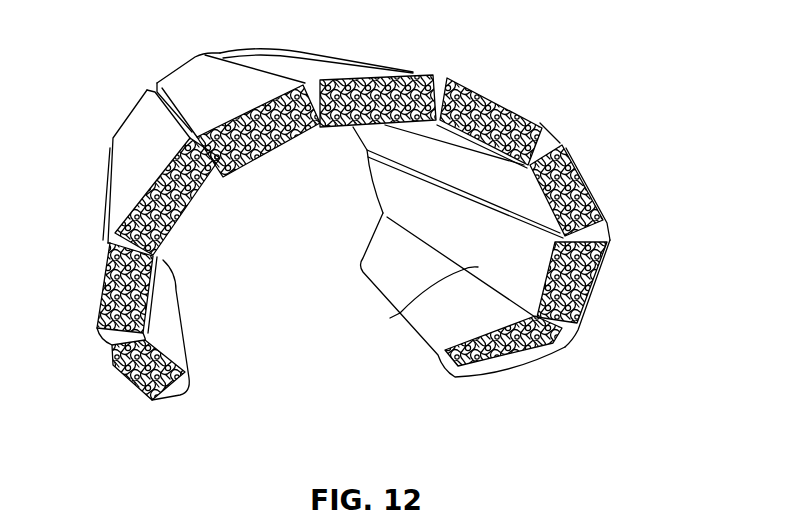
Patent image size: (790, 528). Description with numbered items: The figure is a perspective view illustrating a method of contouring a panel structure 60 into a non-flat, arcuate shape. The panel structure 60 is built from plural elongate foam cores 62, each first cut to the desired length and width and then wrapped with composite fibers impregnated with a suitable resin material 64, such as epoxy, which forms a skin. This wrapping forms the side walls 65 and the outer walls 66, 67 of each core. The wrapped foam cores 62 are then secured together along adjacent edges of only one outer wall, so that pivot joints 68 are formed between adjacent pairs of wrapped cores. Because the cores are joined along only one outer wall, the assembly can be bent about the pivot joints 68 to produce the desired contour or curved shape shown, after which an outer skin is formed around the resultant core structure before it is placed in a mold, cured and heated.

The panel structure 60 is at (354, 216).
The elongate foam core 62 is at (268, 148).
The resin material 64 is at (107, 363).
The side wall 65 is at (552, 140).
The outer wall 66 is at (597, 287).
The outer wall 67 is at (420, 287).
The pivot joint 68 is at (157, 258).